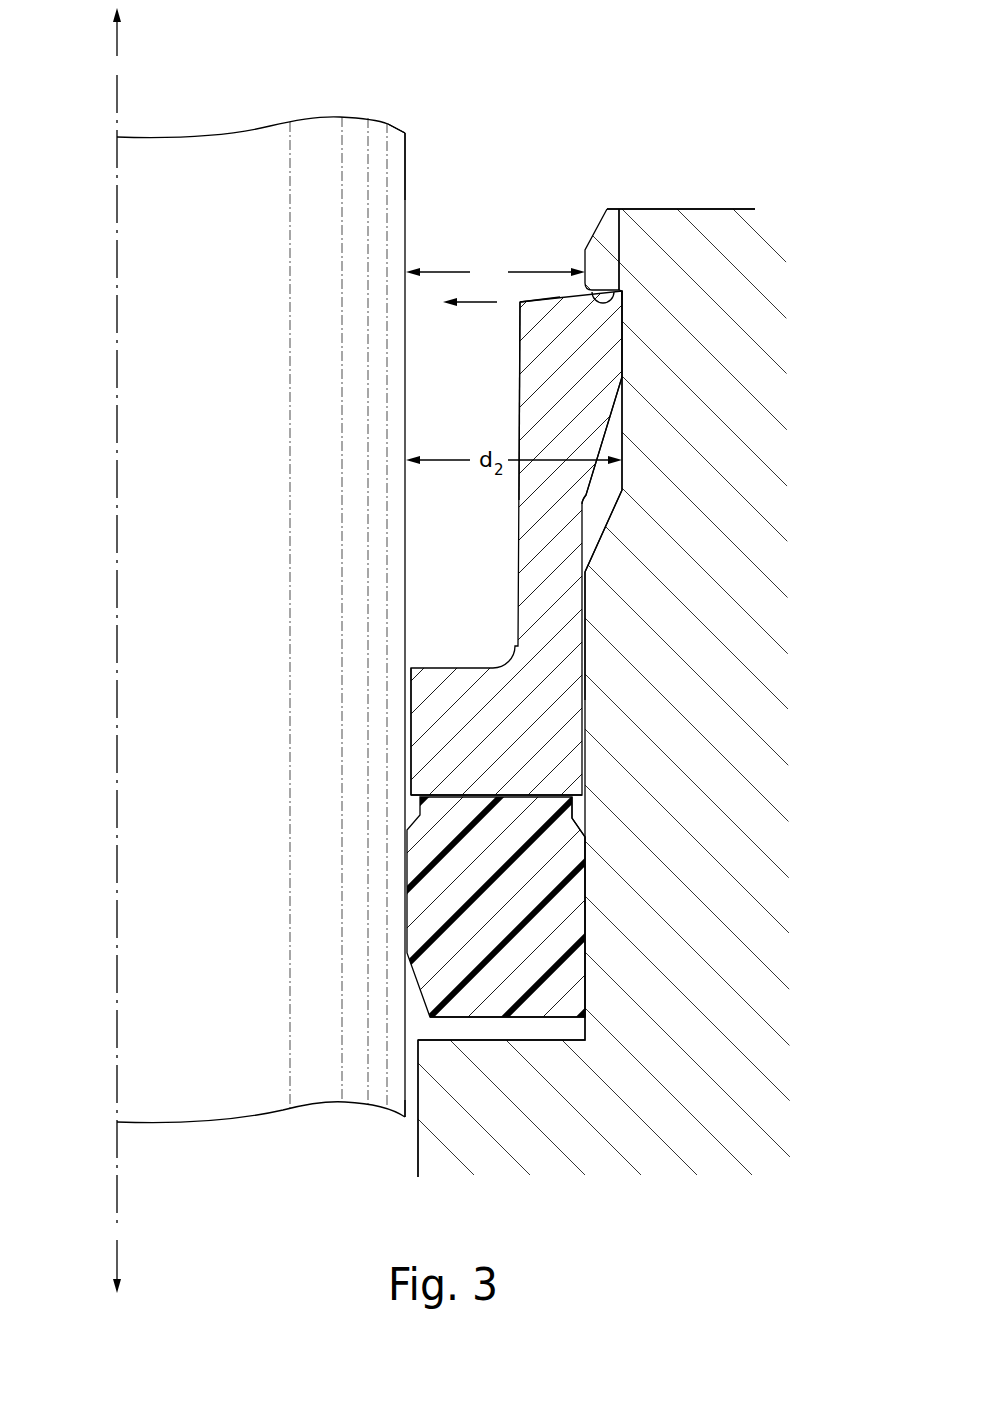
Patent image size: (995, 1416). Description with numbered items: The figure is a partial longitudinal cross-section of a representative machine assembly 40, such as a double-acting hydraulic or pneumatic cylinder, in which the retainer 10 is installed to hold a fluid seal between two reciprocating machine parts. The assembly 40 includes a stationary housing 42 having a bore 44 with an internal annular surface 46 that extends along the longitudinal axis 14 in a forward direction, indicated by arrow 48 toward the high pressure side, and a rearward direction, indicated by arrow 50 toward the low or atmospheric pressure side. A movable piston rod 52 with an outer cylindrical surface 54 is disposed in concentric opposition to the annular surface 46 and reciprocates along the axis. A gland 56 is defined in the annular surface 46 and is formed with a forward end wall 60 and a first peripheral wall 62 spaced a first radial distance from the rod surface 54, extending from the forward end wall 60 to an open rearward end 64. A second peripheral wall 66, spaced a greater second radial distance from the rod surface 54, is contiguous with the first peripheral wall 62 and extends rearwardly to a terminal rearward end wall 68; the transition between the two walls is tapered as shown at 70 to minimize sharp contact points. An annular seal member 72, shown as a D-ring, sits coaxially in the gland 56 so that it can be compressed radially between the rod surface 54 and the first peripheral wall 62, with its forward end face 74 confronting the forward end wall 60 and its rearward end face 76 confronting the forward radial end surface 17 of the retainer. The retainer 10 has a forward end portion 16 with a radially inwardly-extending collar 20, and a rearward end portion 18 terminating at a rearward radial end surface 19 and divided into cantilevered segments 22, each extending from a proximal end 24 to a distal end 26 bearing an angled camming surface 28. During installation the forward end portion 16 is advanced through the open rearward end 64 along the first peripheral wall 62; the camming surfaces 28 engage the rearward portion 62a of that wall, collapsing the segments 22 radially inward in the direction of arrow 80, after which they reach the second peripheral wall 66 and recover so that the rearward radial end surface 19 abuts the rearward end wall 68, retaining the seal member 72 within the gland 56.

The retainer 10 is at (484, 640).
The longitudinal axis 14 is at (117, 107).
The forward end portion 16 is at (587, 792).
The forward radial end surface 17 is at (416, 815).
The rearward end portion 18 is at (622, 312).
The rearward radial end surface 19 is at (535, 297).
The collar 20 is at (408, 708).
The arcuate segment 22 is at (518, 390).
The proximal end 24 is at (585, 610).
The distal end 26 is at (622, 290).
The camming surface 28 is at (622, 397).
The machine assembly 40 is at (497, 610).
The housing 42 is at (720, 208).
The bore 44 is at (393, 1137).
The annular surface 46 is at (417, 1137).
The forward direction arrow 48 is at (117, 1253).
The rearward direction arrow 50 is at (117, 45).
The piston rod 52 is at (384, 122).
The cylindrical surface 54 is at (407, 157).
The gland 56 is at (462, 531).
The forward end wall 60 is at (480, 1040).
The first peripheral wall 62 is at (583, 1025).
The rearward portion of first peripheral wall 62a is at (593, 231).
The open rearward end 64 is at (468, 236).
The second peripheral wall 66 is at (614, 441).
The rearward end wall 68 is at (620, 210).
The tapered transition 70 is at (598, 540).
The seal member 72 is at (587, 885).
The forward end face 74 is at (457, 1018).
The rearward end face 76 is at (480, 795).
The radial inward collapse arrow 80 is at (470, 304).